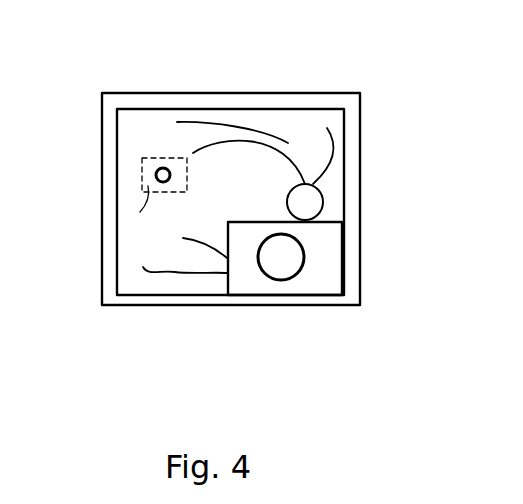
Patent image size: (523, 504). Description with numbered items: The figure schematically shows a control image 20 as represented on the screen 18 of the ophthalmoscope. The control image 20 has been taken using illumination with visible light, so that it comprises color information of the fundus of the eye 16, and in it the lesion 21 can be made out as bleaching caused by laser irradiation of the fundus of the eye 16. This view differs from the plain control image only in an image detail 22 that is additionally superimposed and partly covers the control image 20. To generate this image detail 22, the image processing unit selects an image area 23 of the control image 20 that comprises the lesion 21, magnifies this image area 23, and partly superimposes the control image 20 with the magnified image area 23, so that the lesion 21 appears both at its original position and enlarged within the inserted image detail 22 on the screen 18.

The fundus of the eye 16 is at (239, 181).
The screen 18 is at (142, 93).
The control image 20 is at (110, 300).
The lesion 21 is at (167, 165).
The image detail 22 is at (227, 283).
The image area 23 is at (340, 333).